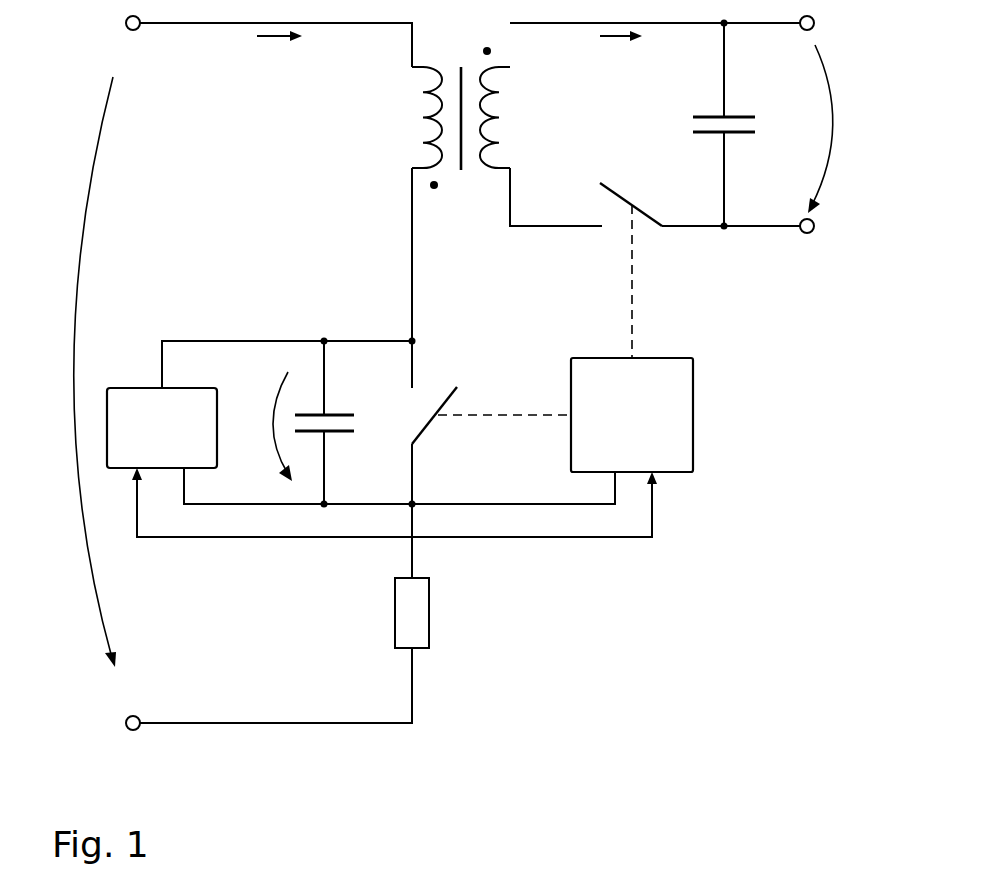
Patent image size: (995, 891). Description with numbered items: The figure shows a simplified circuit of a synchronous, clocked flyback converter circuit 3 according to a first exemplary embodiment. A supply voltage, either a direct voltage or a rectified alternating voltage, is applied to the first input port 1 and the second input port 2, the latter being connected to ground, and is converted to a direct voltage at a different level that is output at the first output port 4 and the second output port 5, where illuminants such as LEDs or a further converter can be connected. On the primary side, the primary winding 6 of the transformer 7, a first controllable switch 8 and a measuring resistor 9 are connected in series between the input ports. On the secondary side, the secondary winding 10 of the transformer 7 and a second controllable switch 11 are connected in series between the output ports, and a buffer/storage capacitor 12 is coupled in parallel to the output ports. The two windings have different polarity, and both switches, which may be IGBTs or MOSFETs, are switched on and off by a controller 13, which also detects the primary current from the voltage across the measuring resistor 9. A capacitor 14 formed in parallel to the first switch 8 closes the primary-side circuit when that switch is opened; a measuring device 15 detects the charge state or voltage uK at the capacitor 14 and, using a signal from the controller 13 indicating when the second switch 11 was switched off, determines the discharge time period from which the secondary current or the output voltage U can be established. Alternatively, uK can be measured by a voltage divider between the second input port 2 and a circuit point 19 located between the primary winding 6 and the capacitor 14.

The first input port 1 is at (126, 23).
The second input port 2 is at (126, 723).
The flyback converter circuit 3 is at (610, 613).
The first output port 4 is at (814, 23).
The second output port 5 is at (814, 226).
The primary winding 6 is at (430, 119).
The transformer 7 is at (461, 220).
The first controllable switch 8 is at (462, 391).
The measuring resistor 9 is at (395, 614).
The secondary winding 10 is at (490, 119).
The second controllable switch 11 is at (611, 183).
The buffer/storage capacitor 12 is at (743, 117).
The controller 13 is at (695, 412).
The capacitor 14 is at (343, 415).
The measuring device 15 is at (120, 388).
The circuit point 19 is at (324, 341).